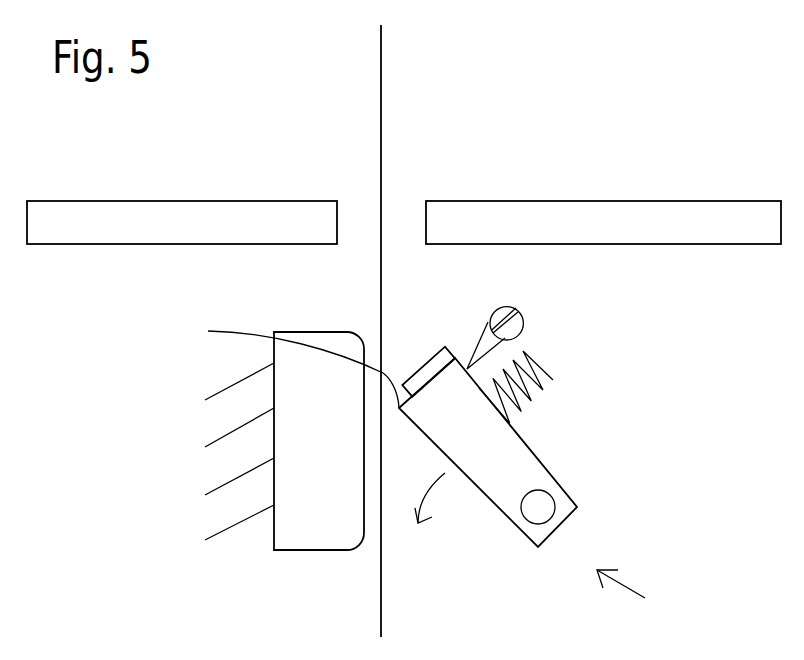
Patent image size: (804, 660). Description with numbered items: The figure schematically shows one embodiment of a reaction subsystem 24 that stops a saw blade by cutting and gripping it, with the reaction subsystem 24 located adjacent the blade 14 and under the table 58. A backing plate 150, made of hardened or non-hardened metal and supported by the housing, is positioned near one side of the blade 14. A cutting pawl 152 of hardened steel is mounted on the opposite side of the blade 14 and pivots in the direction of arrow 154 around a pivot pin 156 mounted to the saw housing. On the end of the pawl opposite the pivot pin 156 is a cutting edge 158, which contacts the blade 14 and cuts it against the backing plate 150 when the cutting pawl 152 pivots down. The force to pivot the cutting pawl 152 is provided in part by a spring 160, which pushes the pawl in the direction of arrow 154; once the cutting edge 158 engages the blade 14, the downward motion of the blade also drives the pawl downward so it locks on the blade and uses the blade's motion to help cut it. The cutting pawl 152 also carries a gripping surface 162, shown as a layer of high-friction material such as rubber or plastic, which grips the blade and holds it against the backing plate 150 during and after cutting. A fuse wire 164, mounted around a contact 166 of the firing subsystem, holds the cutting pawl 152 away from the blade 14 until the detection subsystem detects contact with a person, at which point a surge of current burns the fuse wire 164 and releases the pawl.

The blade 14 is at (382, 125).
The reaction subsystem 24 is at (635, 593).
The table 58 is at (565, 200).
The backing plate 150 is at (334, 503).
The cutting pawl 152 is at (531, 449).
The arrow 154 is at (435, 497).
The pivot pin 156 is at (555, 505).
The cutting edge 158 is at (283, 364).
The spring 160 is at (553, 380).
The gripping surface 162 is at (427, 362).
The fuse wire 164 is at (480, 338).
The contact 166 is at (521, 323).